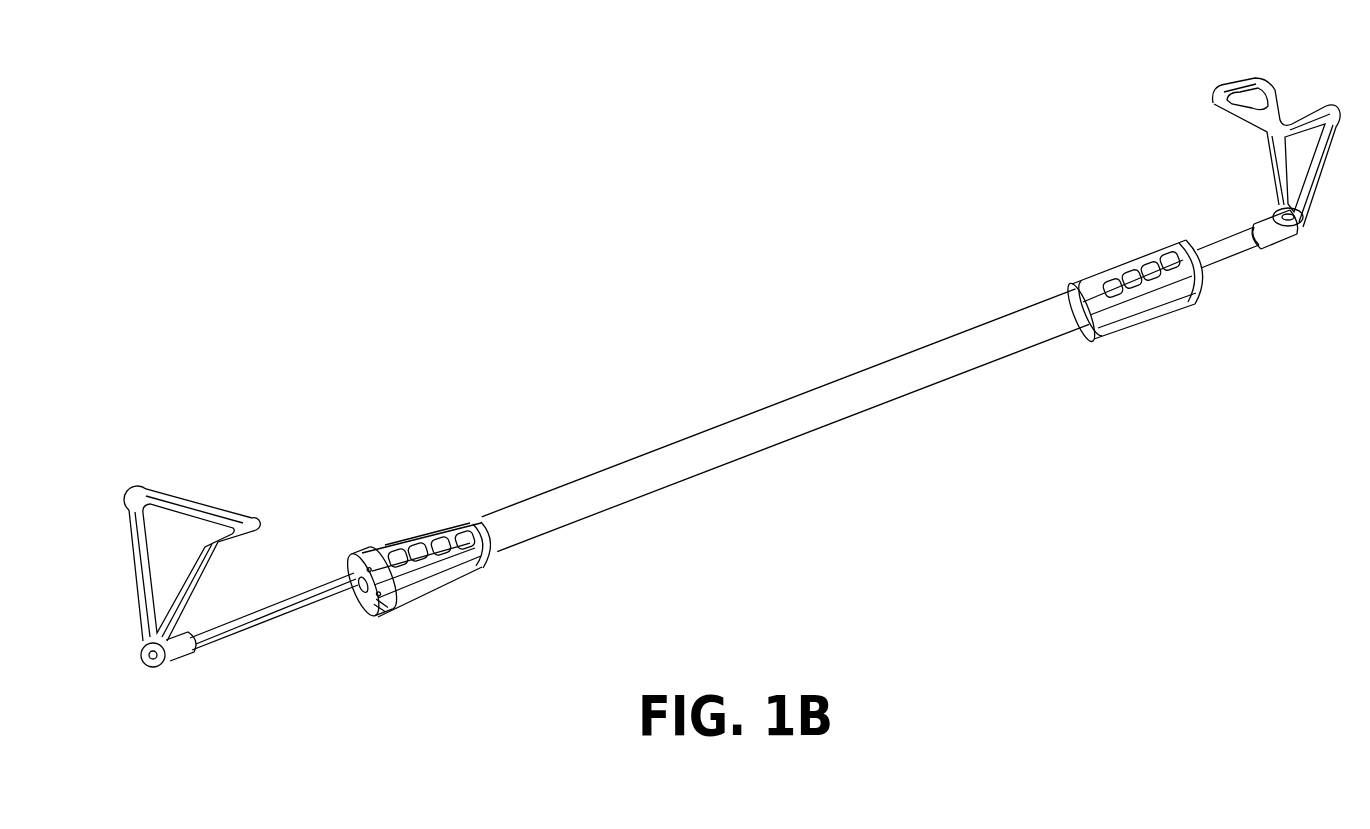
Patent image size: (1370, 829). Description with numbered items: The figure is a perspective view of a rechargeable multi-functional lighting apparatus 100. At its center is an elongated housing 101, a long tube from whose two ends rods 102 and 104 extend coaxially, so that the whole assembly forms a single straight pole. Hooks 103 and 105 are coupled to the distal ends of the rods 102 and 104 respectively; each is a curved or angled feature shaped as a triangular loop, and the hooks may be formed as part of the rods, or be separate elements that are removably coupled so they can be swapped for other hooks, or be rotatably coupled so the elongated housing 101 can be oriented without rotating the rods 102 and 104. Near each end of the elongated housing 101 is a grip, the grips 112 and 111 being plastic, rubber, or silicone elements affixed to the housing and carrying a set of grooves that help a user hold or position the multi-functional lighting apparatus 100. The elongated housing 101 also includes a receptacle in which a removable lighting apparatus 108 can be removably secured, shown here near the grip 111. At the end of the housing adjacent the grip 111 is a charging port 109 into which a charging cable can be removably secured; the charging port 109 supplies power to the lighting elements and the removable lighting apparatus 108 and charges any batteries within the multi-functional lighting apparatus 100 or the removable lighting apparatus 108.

The multi-functional lighting apparatus 100 is at (266, 128).
The elongated housing 101 is at (730, 421).
The rod 102 is at (314, 588).
The hook 103 is at (182, 490).
The rod 104 is at (1237, 247).
The hook 105 is at (1231, 84).
The removable lighting apparatus 108 is at (437, 588).
The charging port 109 is at (362, 624).
The grip 111 is at (408, 524).
The grip 112 is at (1110, 258).